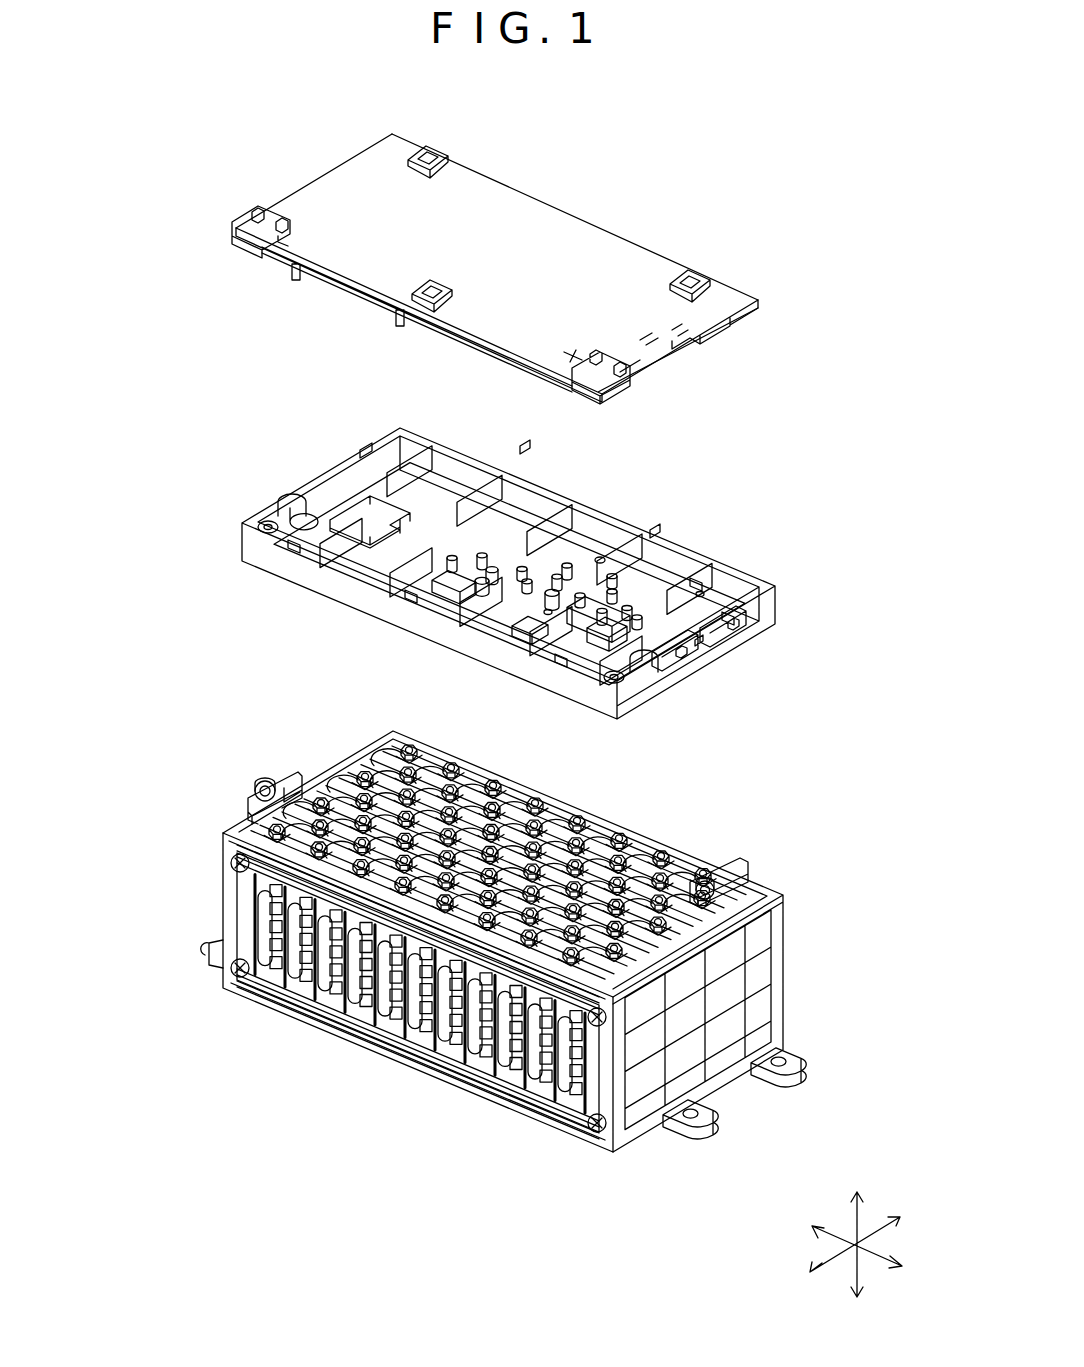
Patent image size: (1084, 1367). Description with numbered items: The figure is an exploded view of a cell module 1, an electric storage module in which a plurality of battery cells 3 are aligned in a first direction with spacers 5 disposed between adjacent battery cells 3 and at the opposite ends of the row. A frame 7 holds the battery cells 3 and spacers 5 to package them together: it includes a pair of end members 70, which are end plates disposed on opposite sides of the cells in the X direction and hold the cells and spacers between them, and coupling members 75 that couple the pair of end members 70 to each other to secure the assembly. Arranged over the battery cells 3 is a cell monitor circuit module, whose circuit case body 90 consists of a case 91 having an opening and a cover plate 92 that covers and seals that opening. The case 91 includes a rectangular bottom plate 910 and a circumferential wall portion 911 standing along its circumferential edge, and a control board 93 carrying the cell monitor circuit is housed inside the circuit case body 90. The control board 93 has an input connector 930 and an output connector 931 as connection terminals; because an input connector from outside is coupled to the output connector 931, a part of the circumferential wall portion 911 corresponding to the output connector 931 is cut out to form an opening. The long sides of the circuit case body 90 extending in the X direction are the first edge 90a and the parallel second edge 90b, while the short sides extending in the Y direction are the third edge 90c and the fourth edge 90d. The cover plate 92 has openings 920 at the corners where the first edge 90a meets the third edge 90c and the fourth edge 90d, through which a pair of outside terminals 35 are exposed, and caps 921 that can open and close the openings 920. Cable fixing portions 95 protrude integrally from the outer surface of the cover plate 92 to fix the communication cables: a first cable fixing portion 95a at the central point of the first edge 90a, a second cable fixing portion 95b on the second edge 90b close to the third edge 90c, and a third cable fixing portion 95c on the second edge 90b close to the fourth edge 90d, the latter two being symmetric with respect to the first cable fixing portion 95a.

The cell module 1 is at (131, 107).
The battery cell 3 is at (522, 1080).
The spacer 5 is at (428, 1005).
The frame 7 is at (650, 1135).
The outside terminal 35 is at (640, 880).
The end member 70 is at (514, 941).
The coupling member 75 is at (473, 952).
The circuit case body 90 is at (849, 232).
The first edge 90a is at (472, 342).
The second edge 90b is at (522, 190).
The third edge 90c is at (748, 320).
The fourth edge 90d is at (315, 178).
The case 91 is at (366, 386).
The cover plate 92 is at (625, 245).
The control board 93 is at (592, 580).
The cable fixing portion 95 is at (574, 197).
The first cable fixing portion 95a is at (428, 283).
The second cable fixing portion 95b is at (695, 270).
The third cable fixing portion 95c is at (430, 150).
The bottom plate 910 is at (365, 515).
The circumferential wall portion 911 is at (378, 452).
The opening 920 is at (640, 682).
The cap 921 is at (612, 382).
The input connector 930 is at (728, 632).
The output connector 931 is at (690, 660).